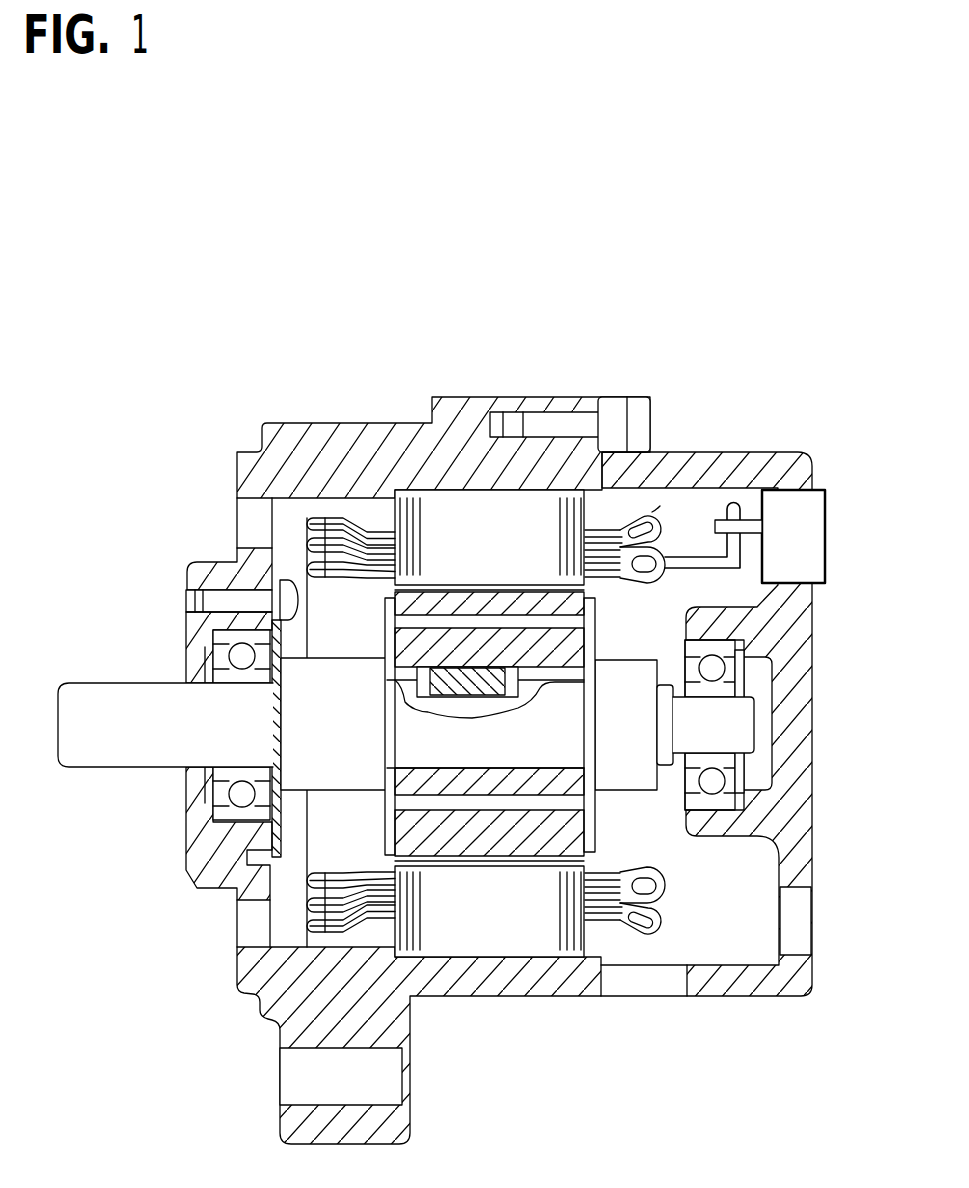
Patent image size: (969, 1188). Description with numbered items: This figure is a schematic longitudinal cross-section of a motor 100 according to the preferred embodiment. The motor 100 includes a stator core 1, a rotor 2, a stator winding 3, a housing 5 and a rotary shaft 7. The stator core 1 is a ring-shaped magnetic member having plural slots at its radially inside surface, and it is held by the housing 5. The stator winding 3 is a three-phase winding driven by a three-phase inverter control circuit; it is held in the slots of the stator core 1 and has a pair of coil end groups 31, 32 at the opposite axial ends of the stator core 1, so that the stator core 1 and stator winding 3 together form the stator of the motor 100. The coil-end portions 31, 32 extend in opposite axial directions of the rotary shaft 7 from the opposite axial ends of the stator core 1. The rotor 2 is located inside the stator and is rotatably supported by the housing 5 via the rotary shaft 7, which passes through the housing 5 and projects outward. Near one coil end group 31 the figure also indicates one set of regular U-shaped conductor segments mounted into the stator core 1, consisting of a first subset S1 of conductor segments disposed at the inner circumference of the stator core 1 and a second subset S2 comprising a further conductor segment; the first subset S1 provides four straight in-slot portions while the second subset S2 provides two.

The motor 100 is at (474, 660).
The stator core 1 is at (458, 520).
The rotor 2 is at (603, 622).
The stator winding 3 is at (609, 520).
The coil end group 31 is at (639, 505).
The coil end group 32 is at (368, 517).
The housing 5 is at (313, 437).
The rotary shaft 7 is at (103, 703).
The first subset of conductor segments S1 is at (664, 541).
The second subset of conductor segments S2 is at (652, 512).